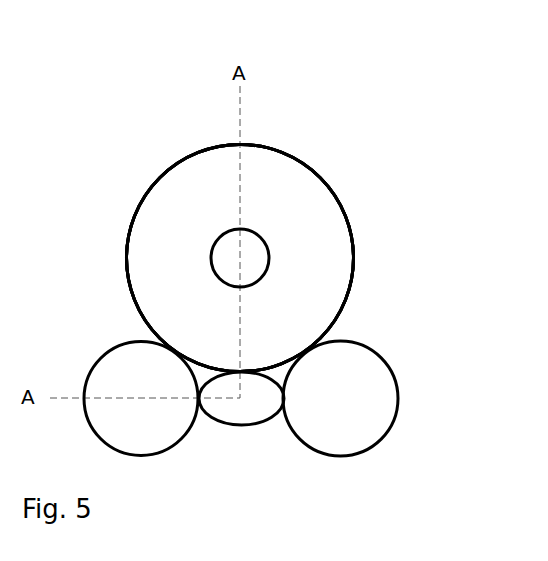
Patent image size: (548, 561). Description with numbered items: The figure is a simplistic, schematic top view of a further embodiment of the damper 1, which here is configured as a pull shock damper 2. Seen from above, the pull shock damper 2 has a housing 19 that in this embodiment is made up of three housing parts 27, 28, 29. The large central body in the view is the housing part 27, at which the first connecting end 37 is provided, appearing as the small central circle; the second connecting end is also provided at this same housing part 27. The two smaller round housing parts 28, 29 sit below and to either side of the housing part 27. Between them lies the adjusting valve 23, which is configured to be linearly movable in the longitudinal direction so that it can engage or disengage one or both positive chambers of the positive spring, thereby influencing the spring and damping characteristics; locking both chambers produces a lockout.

The damper 1 is at (120, 182).
The pull shock damper 2 is at (125, 236).
The housing 19 is at (320, 171).
The housing part 27 is at (355, 255).
The first connecting end 37 is at (248, 228).
The housing part 28 is at (100, 352).
The housing part 29 is at (378, 350).
The adjusting valve 23 is at (245, 433).